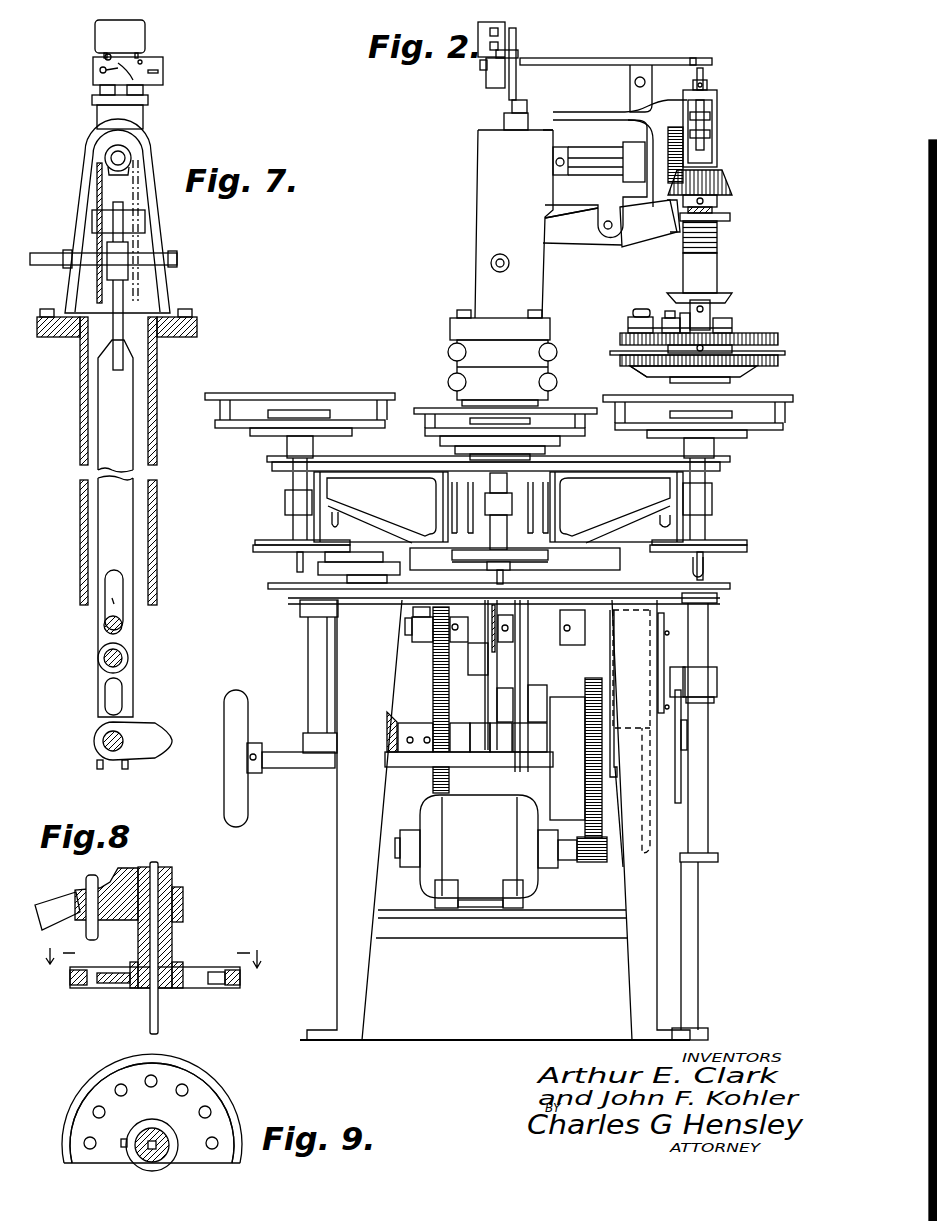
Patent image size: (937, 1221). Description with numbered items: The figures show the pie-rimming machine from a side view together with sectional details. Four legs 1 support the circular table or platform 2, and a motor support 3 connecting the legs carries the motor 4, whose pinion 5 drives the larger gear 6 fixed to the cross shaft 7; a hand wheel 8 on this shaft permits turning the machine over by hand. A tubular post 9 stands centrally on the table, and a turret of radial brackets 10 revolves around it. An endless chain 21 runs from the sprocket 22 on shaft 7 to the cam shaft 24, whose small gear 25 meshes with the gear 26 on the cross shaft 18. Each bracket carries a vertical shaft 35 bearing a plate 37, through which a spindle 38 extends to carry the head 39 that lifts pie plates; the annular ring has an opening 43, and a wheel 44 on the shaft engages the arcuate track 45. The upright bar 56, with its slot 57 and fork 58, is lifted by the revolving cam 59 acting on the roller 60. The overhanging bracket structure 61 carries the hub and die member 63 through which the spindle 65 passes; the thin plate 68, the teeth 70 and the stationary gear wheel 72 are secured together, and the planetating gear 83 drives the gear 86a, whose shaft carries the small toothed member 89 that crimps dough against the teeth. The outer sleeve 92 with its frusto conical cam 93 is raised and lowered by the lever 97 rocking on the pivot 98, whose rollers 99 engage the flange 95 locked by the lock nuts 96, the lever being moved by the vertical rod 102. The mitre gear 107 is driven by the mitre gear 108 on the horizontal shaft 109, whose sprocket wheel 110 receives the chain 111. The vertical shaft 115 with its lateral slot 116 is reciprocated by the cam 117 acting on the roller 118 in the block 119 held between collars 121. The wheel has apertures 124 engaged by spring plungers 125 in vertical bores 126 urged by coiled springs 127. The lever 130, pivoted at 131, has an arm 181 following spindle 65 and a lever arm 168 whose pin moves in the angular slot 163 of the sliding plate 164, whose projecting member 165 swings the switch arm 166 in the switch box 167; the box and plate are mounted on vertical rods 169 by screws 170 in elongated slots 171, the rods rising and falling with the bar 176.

In FIG. 2, the legs 1 is at (495, 820).
In FIG. 2, the table or platform 2 is at (268, 461).
In FIG. 2, the motor support 3 is at (472, 940).
In FIG. 2, the motor 4 is at (476, 851).
In FIG. 2, the pinion 5 is at (590, 862).
In FIG. 2, the gear 6 is at (584, 715).
In FIG. 2, the shaft 7 is at (272, 766).
In FIG. 2, the hand wheel 8 is at (246, 815).
In FIG. 7, the tubular post 9 is at (157, 430).
In FIG. 8, the tubular post 9 is at (153, 962).
In FIG. 2, the radial frames or brackets 10 is at (393, 521).
In FIG. 7, the cross shaft 18 is at (103, 745).
In FIG. 2, the endless chain 21 is at (612, 690).
In FIG. 2, the sprocket 22 is at (620, 771).
In FIG. 7, the cam shaft 24 is at (122, 625).
In FIG. 2, the cam shaft 24 is at (528, 640).
In FIG. 2, the small gear 25 is at (432, 633).
In FIG. 2, the gear 26 is at (433, 700).
In FIG. 2, the vertical shaft 35 is at (713, 490).
In FIG. 2, the plate 37 is at (764, 430).
In FIG. 8, the spindle 38 is at (148, 1008).
In FIG. 2, the spindle 38 is at (296, 567).
In FIG. 2, the head or plate 39 is at (732, 414).
In FIG. 2, the opening 43 is at (292, 394).
In FIG. 8, the wheel 44 is at (195, 985).
In FIG. 9, the wheel 44 is at (172, 1082).
In FIG. 2, the wheel 44 is at (258, 540).
In FIG. 2, the track 45 is at (342, 566).
In FIG. 7, the upright bar 56 is at (112, 584).
In FIG. 7, the slot 57 is at (112, 600).
In FIG. 7, the fork 58 is at (135, 703).
In FIG. 7, the revolving cam 59 is at (133, 741).
In FIG. 2, the revolving cam 59 is at (486, 688).
In FIG. 7, the anti-friction roller 60 is at (128, 655).
In FIG. 2, the overhanging bracket structure 61 is at (578, 112).
In FIG. 2, the hub / die member 63 is at (650, 368).
In FIG. 9, the rod or spindle 65 is at (152, 1140).
In FIG. 2, the rod or spindle 65 is at (706, 78).
In FIG. 2, the thin plate 68 is at (612, 352).
In FIG. 2, the teeth 70 is at (778, 362).
In FIG. 2, the gear wheel 72 is at (760, 333).
In FIG. 2, the gear wheel 83 is at (628, 338).
In FIG. 2, the gear 86a is at (712, 342).
In FIG. 2, the small toothed member 89 is at (730, 374).
In FIG. 2, the outer sleeve 92 is at (700, 273).
In FIG. 2, the frusto conical cam member 93 is at (720, 296).
In FIG. 2, the flange or ring 95 is at (732, 217).
In FIG. 2, the lock nuts 96 is at (718, 235).
In FIG. 2, the lever 97 is at (574, 228).
In FIG. 2, the pivot 98 is at (609, 230).
In FIG. 2, the rollers 99 is at (672, 234).
In FIG. 2, the vertical rod 102 is at (528, 676).
In FIG. 2, the mitre gear 107 is at (730, 186).
In FIG. 2, the mitre gear 108 is at (685, 140).
In FIG. 7, the horizontal shaft 109 is at (125, 156).
In FIG. 2, the horizontal shaft 109 is at (590, 157).
In FIG. 7, the sprocket wheel 110 is at (116, 176).
In FIG. 7, the chain 111 is at (97, 200).
In FIG. 2, the vertical shaft 115 is at (710, 660).
In FIG. 2, the lateral slot 116 is at (706, 573).
In FIG. 2, the cam 117 is at (682, 803).
In FIG. 2, the antifriction roller 118 is at (678, 667).
In FIG. 2, the block 119 is at (717, 682).
In FIG. 2, the collars 121 is at (712, 703).
In FIG. 8, the apertures 124 is at (216, 972).
In FIG. 9, the apertures 124 is at (195, 1098).
In FIG. 8, the spring plungers 125 is at (90, 888).
In FIG. 8, the vertical bores 126 is at (112, 880).
In FIG. 8, the coiled spring 127 is at (70, 896).
In FIG. 2, the lever 130 is at (645, 58).
In FIG. 2, the pivot 131 is at (635, 82).
In FIG. 7, the angular slot 163 is at (120, 75).
In FIG. 7, the plate 164 is at (165, 78).
In FIG. 7, the projecting member 165 is at (146, 58).
In FIG. 7, the electric switch arm 166 is at (104, 60).
In FIG. 7, the switch box 167 is at (127, 27).
In FIG. 2, the switch box 167 is at (488, 21).
In FIG. 2, the lever arm 168 is at (566, 58).
In FIG. 2, the vertical rods 169 is at (517, 80).
In FIG. 7, the screws 170 is at (100, 71).
In FIG. 7, the elongated slots 171 is at (151, 75).
In FIG. 2, the bar 176 is at (505, 624).
In FIG. 2, the arm 181 is at (693, 58).